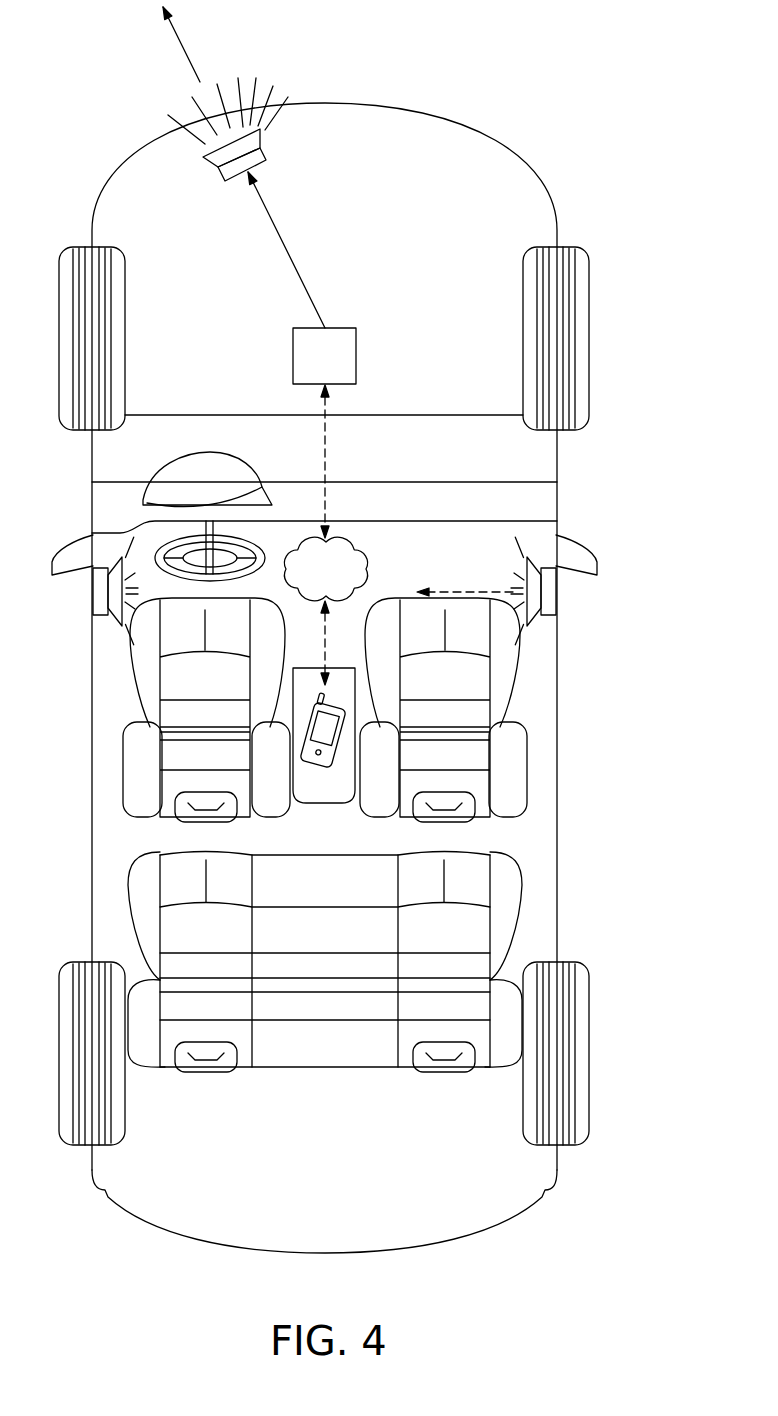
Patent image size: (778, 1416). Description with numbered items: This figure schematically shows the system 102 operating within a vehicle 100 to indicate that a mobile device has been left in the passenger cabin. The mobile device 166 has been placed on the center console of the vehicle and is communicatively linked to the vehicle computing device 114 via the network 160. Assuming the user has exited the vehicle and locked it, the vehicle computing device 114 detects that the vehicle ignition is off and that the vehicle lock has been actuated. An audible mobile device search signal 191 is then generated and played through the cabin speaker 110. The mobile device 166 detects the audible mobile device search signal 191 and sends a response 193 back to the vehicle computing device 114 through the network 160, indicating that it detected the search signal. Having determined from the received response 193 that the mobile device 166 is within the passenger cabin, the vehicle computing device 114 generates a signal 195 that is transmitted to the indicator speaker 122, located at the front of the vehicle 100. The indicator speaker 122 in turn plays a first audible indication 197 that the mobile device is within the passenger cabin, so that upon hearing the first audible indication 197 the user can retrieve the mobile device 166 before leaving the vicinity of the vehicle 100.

The vehicle 100 is at (555, 119).
The system 102 is at (385, 321).
The cabin speaker 110 is at (93, 596).
The vehicle computing device 114 is at (344, 328).
The indicator speaker 122 is at (256, 163).
The network 160 is at (347, 582).
The mobile device 166 is at (318, 765).
The audible mobile device search signal 191 is at (467, 590).
The response 193 is at (330, 457).
The signal 195 is at (284, 252).
The first audible indication 197 is at (185, 50).